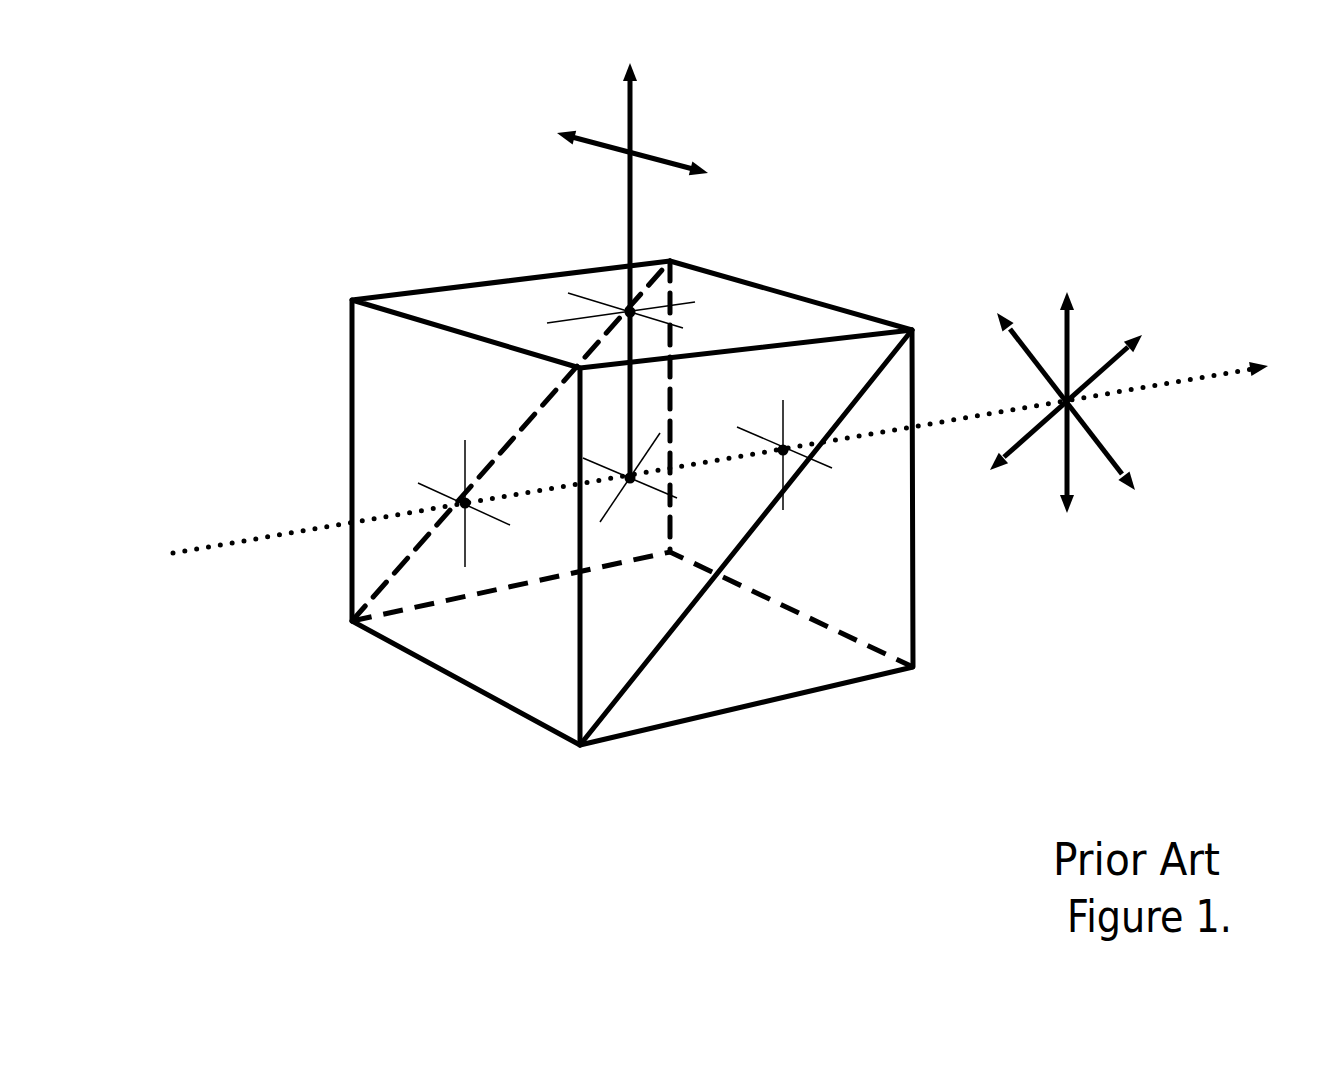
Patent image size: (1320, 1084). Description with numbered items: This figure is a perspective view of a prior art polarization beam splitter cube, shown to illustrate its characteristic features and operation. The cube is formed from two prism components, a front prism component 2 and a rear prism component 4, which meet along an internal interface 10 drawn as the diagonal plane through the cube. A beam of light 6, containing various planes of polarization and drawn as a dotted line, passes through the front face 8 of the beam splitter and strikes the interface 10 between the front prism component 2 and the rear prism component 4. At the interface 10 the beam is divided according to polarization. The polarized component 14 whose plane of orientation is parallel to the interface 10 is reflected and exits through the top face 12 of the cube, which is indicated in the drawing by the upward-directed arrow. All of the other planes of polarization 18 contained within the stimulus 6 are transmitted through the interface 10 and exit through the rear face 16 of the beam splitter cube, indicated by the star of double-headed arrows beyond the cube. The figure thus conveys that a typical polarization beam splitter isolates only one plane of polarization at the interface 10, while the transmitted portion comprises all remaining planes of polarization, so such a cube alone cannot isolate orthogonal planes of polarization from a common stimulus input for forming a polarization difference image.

The front prism component 2 is at (467, 306).
The rear prism component 4 is at (793, 645).
The beam of light 6 is at (700, 468).
The front face 8 is at (465, 503).
The interface 10 is at (630, 478).
The top face 12 is at (630, 312).
The polarized component parallel to the interface 14 is at (634, 270).
The rear face 16 is at (783, 450).
The other planes of polarization 18 is at (1073, 395).